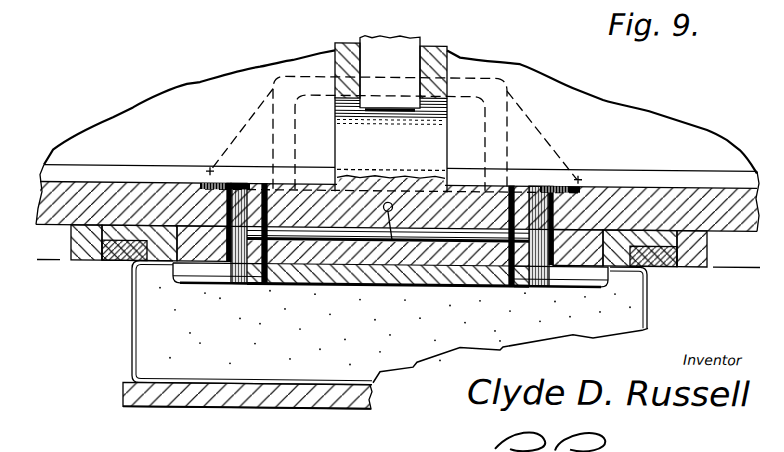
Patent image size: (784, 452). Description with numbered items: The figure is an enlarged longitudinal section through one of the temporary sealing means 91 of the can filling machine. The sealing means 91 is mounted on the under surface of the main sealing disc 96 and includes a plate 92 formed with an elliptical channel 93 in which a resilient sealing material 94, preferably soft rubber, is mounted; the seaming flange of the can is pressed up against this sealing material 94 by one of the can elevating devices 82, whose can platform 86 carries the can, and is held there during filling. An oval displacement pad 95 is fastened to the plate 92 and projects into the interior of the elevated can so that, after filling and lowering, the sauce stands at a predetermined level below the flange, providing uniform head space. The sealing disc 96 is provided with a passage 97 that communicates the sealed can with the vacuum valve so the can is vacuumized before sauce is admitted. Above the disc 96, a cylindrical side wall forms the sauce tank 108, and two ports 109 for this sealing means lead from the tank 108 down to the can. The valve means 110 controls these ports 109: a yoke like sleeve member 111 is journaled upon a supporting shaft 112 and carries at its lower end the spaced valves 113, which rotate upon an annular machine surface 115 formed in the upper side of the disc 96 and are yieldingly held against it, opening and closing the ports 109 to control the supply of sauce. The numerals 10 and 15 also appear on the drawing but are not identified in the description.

The sauce tank 108 is at (222, 82).
The yoke like sleeve member 111 is at (345, 57).
The supporting shaft 112 is at (402, 45).
The valve means 110 is at (524, 133).
The ports 109 is at (243, 200).
The valves 113 is at (210, 171).
The annular machine surface 115 is at (190, 192).
The main sealing disc 96 is at (692, 198).
The passage 97 is at (389, 202).
The temporary sealing means 91 is at (66, 240).
The plate 92 is at (707, 253).
The elliptical channel 93 is at (96, 265).
The resilient sealing material 94 is at (118, 265).
The oval displacement pad 95 is at (408, 284).
The clearance gap 10 is at (41, 266).
The cup casing 15 is at (127, 350).
The can platform 86 is at (128, 400).
The can elevating devices 82 is at (188, 413).